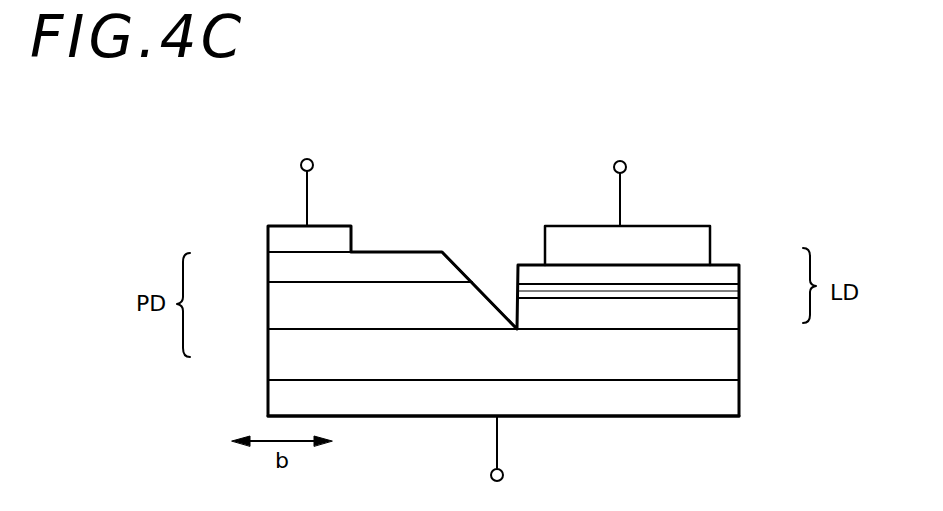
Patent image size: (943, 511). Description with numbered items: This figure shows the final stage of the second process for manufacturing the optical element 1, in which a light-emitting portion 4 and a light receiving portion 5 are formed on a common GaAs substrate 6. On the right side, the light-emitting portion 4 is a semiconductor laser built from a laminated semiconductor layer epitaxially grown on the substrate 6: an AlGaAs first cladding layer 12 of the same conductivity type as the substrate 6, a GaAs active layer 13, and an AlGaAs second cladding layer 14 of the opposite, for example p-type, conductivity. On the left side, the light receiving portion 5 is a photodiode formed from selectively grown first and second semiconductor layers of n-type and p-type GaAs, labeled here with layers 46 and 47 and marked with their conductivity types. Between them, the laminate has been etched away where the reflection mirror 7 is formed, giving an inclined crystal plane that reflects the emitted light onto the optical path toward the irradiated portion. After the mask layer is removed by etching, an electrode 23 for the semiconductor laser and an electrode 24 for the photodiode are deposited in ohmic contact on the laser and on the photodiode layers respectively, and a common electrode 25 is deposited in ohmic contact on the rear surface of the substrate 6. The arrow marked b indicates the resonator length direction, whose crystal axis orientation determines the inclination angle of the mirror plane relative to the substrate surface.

The optical element 1 is at (265, 185).
The light-emitting portion 4 is at (700, 177).
The light receiving portion 5 is at (425, 216).
The substrate 6 is at (725, 355).
The reflection mirror 7 is at (485, 287).
The first cladding layer 12 is at (723, 313).
The active layer 13 is at (725, 293).
The second cladding layer 14 is at (725, 275).
The electrode 23 is at (690, 248).
The electrode 24 is at (335, 237).
The common electrode 25 is at (652, 398).
The n-type layer of photodiode 46 is at (282, 307).
The p-type layer of photodiode 47 is at (282, 265).